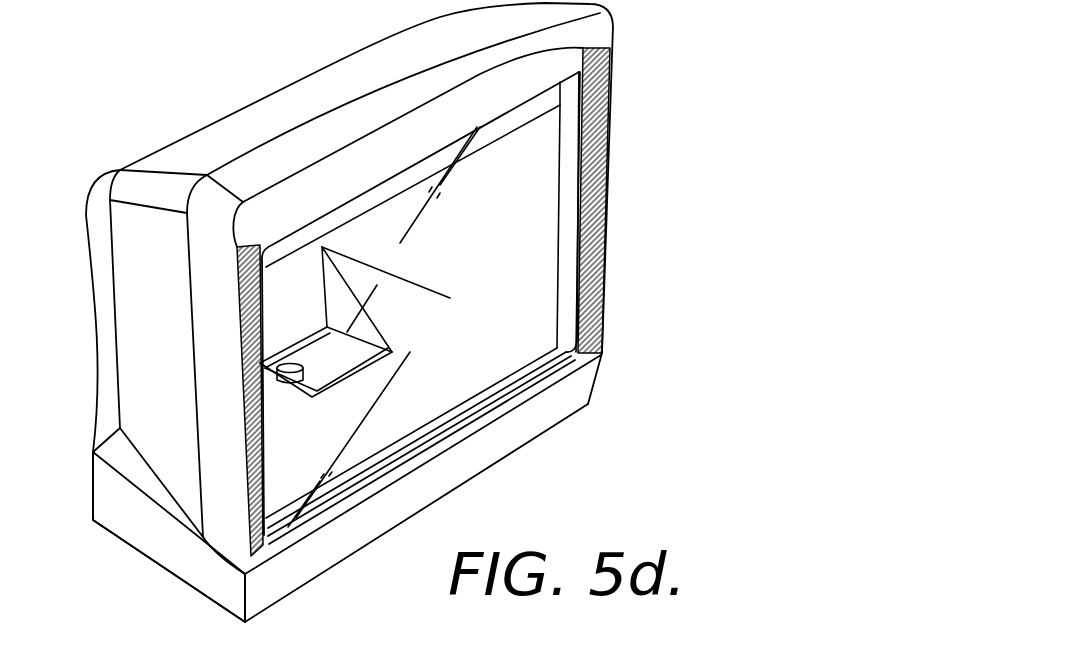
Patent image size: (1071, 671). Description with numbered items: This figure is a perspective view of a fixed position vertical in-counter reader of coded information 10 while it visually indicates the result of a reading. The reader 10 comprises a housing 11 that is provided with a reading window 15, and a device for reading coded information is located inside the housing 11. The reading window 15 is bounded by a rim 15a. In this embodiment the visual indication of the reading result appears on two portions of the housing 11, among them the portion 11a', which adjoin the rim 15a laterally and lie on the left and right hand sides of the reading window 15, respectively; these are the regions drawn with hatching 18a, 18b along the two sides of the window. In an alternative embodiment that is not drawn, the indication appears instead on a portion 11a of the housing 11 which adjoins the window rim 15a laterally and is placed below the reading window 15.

The fixed position reader of coded information 10 is at (634, 60).
The housing 11 is at (197, 140).
The portion of the housing 11a is at (347, 488).
The portion of the housing 11a' is at (177, 537).
The reading window 15 is at (540, 225).
The rim of the reading window 15a is at (605, 302).
The left illumination strip 18a is at (240, 303).
The right illumination strip 18b is at (600, 110).